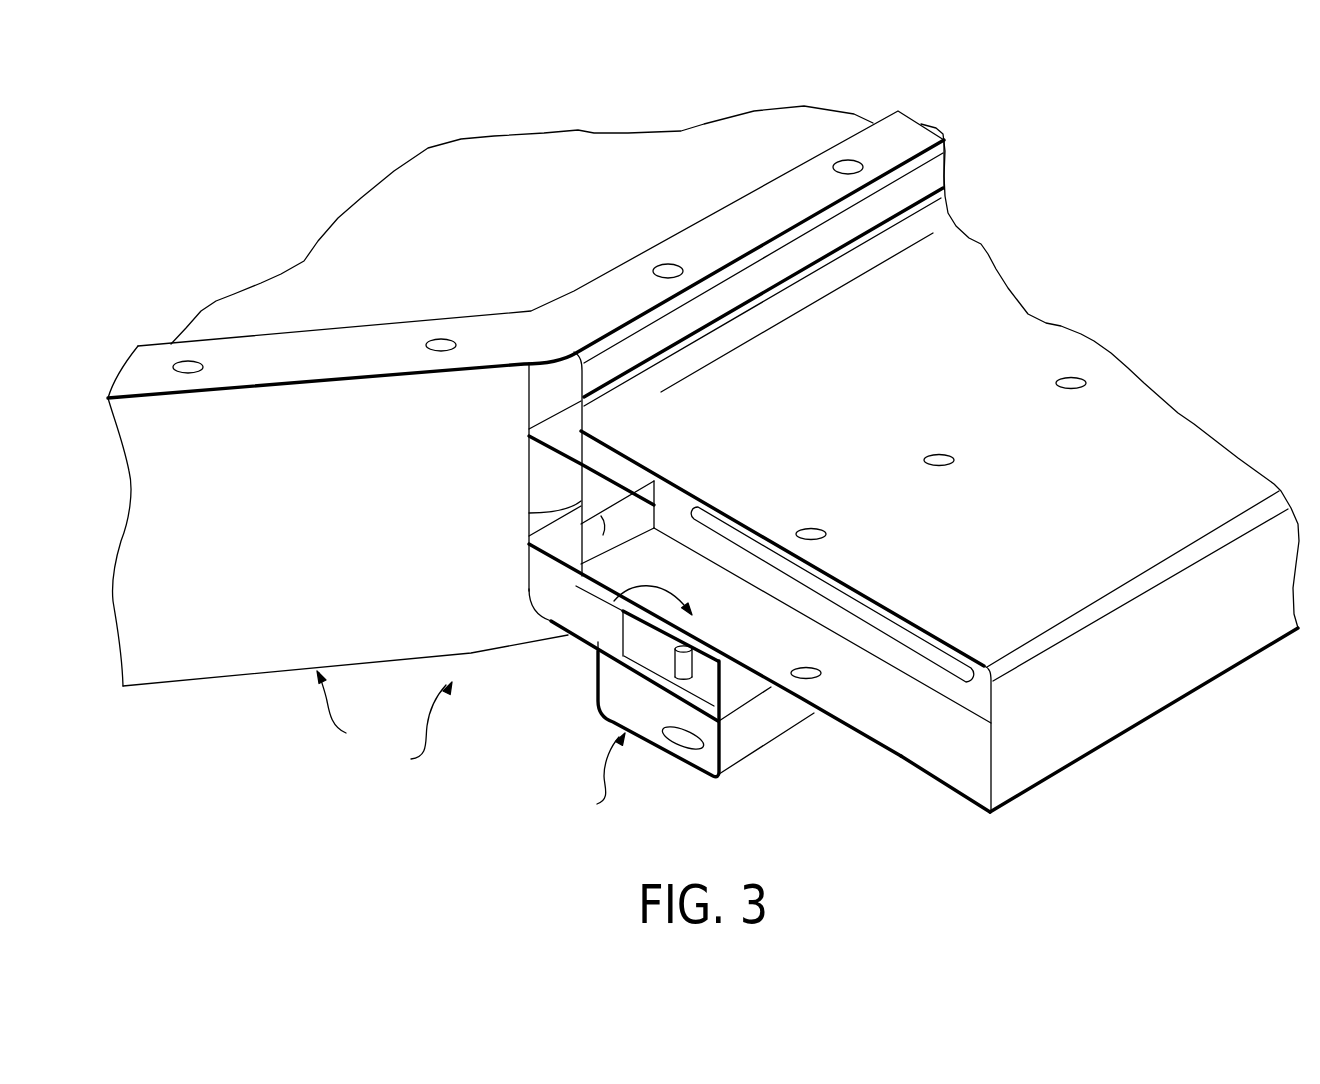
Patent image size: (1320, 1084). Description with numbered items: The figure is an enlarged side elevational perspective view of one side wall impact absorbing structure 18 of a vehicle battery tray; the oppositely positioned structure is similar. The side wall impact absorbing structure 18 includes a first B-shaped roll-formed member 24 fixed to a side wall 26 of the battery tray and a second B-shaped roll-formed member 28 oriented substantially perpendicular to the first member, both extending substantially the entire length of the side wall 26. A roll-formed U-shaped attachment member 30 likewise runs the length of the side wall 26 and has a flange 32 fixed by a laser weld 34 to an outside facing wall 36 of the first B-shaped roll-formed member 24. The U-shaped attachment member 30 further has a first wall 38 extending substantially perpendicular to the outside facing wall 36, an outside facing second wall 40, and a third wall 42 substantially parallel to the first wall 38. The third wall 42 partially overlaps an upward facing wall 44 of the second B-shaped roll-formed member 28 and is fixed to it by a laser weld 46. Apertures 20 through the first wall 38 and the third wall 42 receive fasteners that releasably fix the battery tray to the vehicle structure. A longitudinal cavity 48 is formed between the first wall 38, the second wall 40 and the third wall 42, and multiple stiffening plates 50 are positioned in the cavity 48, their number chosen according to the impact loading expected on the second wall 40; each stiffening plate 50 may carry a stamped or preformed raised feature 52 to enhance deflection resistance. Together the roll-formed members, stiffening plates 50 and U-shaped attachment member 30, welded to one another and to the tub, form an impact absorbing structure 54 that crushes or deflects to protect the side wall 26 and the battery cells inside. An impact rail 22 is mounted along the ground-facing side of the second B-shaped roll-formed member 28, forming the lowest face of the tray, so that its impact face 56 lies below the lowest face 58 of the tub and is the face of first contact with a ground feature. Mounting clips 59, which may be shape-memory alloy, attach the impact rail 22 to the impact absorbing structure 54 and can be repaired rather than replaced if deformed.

The side wall impact absorbing structure 18 is at (897, 137).
The apertures 20 is at (1069, 377).
The impact rail 22 is at (693, 763).
The first B-shaped roll-formed member 24 is at (528, 512).
The side wall 26 is at (463, 643).
The second B-shaped roll-formed member 28 is at (597, 644).
The U-shaped attachment member 30 is at (580, 466).
The flange 32 is at (930, 212).
The laser weld 34 is at (942, 180).
The outside facing wall 36 is at (545, 545).
The first wall 38 is at (835, 579).
The second wall 40 is at (968, 772).
The third wall 42 is at (863, 742).
The upward facing wall 44 is at (705, 588).
The laser weld 46 is at (567, 637).
The longitudinal cavity 48 is at (965, 784).
The stiffening plates 50 is at (540, 580).
The raised feature 52 is at (688, 514).
The impact absorbing structure 54 is at (418, 730).
The impact face 56 is at (595, 778).
The lowest face 58 is at (344, 708).
The mounting clips 59 is at (670, 662).